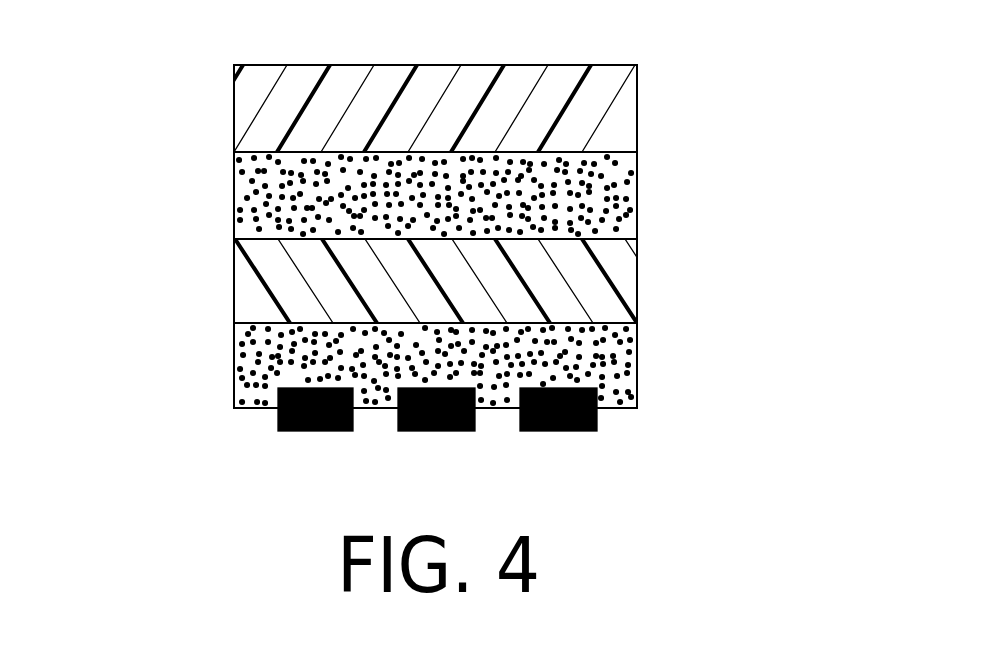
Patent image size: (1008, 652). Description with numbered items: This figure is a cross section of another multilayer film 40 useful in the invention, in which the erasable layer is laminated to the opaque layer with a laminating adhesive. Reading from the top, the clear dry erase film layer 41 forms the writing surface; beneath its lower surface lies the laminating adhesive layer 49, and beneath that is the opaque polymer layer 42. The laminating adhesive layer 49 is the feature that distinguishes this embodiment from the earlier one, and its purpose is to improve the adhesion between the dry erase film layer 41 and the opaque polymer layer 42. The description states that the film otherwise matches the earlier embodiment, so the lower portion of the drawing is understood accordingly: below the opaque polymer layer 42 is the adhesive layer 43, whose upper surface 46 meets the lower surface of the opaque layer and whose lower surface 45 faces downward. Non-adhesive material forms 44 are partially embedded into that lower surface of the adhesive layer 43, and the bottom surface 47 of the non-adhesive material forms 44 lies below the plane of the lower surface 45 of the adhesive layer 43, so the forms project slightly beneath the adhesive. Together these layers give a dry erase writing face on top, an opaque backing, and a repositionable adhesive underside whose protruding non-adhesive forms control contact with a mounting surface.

The layered device 40 is at (183, 82).
The dry erase film layer 41 is at (638, 105).
The laminating adhesive layer 49 is at (638, 203).
The opaque polymer layer 42 is at (638, 292).
The substrate layer 43 is at (638, 367).
The interface 46 is at (263, 323).
The bottom surface 45 is at (257, 410).
The contact 47 is at (433, 430).
The contact 44 is at (567, 429).